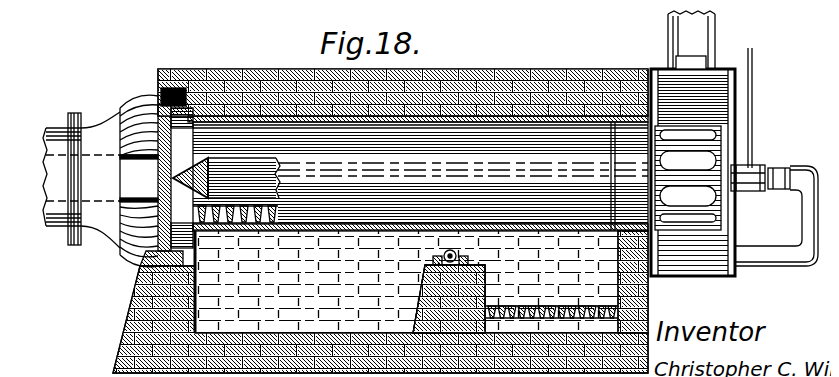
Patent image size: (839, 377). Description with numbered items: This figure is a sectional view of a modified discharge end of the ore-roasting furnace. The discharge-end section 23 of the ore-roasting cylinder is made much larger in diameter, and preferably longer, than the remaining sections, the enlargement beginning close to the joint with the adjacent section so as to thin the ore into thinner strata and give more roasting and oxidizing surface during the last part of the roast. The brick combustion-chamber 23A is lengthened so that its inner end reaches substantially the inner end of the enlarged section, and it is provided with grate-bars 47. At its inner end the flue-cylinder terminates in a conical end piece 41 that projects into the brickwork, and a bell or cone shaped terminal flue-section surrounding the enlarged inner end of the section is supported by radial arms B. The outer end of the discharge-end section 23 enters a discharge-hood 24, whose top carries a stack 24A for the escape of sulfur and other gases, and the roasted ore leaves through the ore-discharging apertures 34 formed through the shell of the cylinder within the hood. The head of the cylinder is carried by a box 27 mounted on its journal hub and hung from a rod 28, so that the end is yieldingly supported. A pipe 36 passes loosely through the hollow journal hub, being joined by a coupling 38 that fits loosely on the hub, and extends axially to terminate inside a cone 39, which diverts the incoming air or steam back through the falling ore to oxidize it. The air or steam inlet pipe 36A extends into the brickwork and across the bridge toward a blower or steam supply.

The discharge-end section 23 is at (420, 176).
The combustion-chamber 23A is at (503, 61).
The discharge-hood 24 is at (662, 270).
The stack 24A is at (709, 14).
The box 27 is at (748, 160).
The rod 28 is at (746, 107).
The ore-discharging apertures 34 is at (677, 152).
The pipe 36 is at (272, 164).
The air or steam inlet pipe 36A is at (771, 260).
The coupling 38 is at (783, 161).
The cone 39 is at (165, 173).
The conical end piece 41 is at (132, 92).
The grate-bars 47 is at (522, 297).
The radial arms B is at (112, 108).